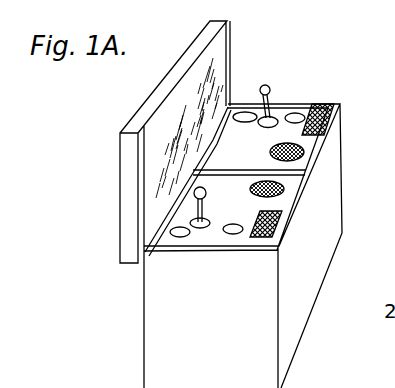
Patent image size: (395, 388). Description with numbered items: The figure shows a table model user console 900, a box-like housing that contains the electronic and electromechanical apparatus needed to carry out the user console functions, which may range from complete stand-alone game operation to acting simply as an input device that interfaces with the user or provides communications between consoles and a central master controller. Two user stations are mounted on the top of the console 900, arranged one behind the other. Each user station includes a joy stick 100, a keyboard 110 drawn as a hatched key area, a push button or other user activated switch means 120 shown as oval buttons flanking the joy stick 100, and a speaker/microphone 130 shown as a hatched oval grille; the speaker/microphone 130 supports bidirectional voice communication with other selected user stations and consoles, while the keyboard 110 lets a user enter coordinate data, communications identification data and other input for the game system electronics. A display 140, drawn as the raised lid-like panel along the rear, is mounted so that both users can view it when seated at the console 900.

The table model user console 900 is at (163, 320).
The display 140 is at (230, 53).
The push button 120 is at (245, 111).
The joy stick 100 is at (271, 99).
The keyboard 110 is at (330, 101).
The speaker/microphone 130 is at (304, 154).